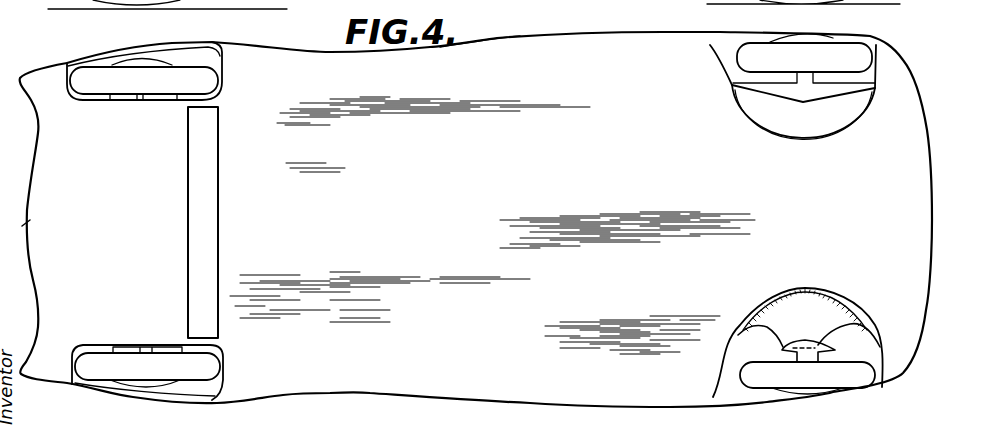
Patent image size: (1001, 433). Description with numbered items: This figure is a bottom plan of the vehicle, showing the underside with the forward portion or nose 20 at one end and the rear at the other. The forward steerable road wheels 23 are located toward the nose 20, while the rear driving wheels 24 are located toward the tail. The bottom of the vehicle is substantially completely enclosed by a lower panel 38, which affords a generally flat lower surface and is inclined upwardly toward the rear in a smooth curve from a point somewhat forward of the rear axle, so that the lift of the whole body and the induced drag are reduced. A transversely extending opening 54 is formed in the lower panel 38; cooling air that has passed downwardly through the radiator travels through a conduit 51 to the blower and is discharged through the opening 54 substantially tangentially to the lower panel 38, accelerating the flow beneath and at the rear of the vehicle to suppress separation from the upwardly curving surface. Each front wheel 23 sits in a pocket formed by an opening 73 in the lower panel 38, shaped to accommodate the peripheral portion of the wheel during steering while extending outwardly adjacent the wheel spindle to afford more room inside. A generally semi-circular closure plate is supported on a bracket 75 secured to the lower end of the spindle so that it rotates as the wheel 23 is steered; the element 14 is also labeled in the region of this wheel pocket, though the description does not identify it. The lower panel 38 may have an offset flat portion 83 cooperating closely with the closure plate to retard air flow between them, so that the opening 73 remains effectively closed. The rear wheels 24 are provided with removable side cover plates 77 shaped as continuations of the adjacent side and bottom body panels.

The forward portion or nose 20 is at (933, 188).
The forward steerable road wheels 23 is at (747, 370).
The rear driving wheels 24 is at (208, 365).
The side cover plates 77 is at (198, 395).
The transversely extending opening 54 is at (43, 182).
The conduit 51 is at (23, 225).
The lower panel 38 is at (473, 67).
The rear wheel well 14 is at (823, 127).
The bracket 75 is at (843, 95).
The offset flat portion 83 is at (812, 308).
The opening 73 is at (860, 338).